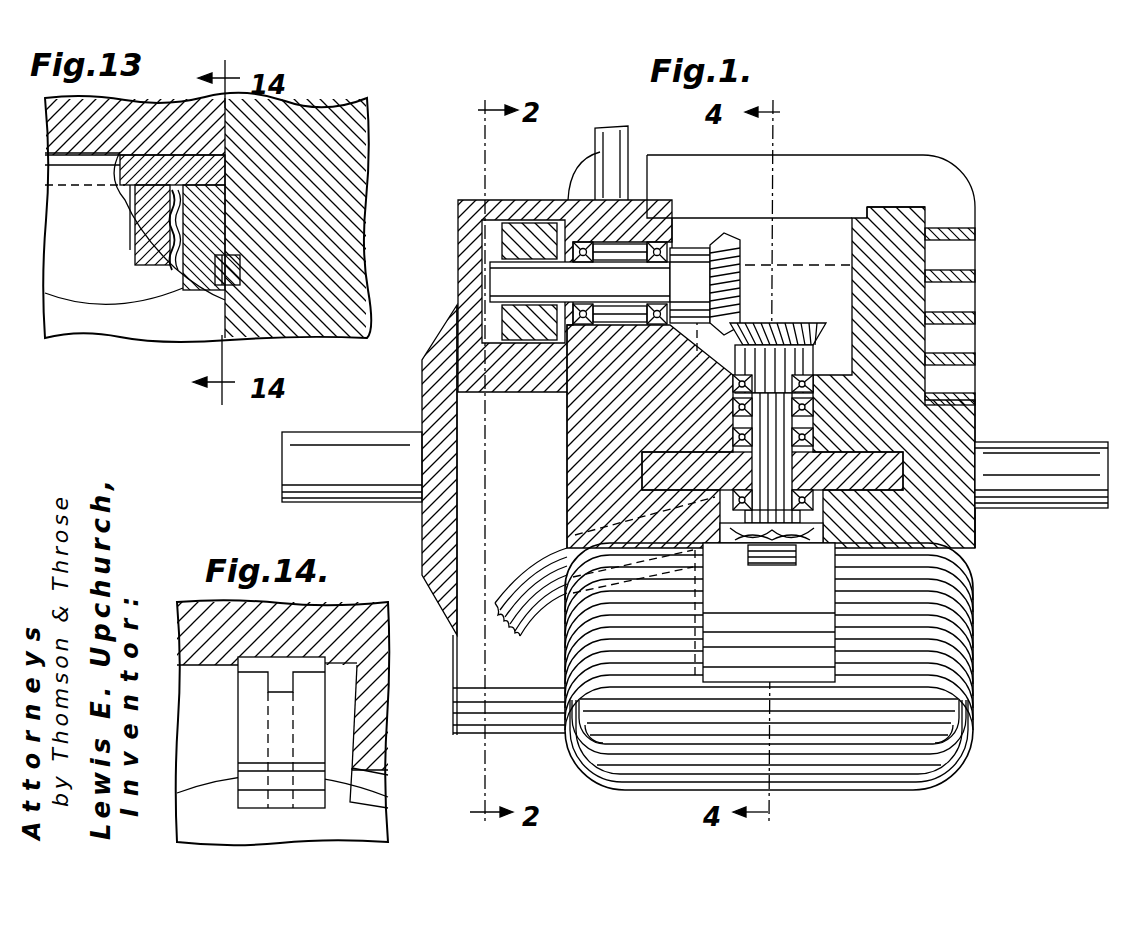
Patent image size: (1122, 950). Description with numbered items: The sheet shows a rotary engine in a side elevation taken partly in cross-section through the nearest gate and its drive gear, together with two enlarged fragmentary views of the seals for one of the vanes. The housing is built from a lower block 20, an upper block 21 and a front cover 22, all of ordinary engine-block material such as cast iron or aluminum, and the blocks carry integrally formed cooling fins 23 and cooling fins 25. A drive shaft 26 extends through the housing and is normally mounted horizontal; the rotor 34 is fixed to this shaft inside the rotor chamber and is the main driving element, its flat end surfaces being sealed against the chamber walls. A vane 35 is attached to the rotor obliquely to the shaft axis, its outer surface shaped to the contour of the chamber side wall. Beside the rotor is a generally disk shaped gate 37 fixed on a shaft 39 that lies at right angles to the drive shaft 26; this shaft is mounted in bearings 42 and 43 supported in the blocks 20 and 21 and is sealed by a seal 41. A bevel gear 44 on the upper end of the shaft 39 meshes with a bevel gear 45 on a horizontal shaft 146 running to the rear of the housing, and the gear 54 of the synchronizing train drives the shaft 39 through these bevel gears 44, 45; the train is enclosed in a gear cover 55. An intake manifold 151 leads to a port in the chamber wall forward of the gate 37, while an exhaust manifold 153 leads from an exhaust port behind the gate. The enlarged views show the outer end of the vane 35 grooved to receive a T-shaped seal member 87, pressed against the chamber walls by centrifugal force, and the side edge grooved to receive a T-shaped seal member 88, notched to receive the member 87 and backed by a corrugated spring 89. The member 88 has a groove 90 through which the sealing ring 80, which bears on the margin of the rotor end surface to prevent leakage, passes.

In FIG. 13, the lower block 20 is at (347, 222).
In FIG. 1, the lower block 20 is at (637, 713).
In FIG. 1, the upper block 21 is at (593, 215).
In FIG. 1, the front cover 22 is at (903, 330).
In FIG. 1, the cooling fins 23 is at (818, 727).
In FIG. 1, the cooling fins 25 is at (975, 357).
In FIG. 1, the drive shaft 26 is at (1048, 452).
In FIG. 13, the rotor 34 is at (172, 323).
In FIG. 14, the rotor 34 is at (356, 830).
In FIG. 13, the vane 35 is at (110, 292).
In FIG. 1, the gate 37 is at (975, 520).
In FIG. 1, the shaft 39 is at (765, 480).
In FIG. 1, the seal 41 is at (710, 393).
In FIG. 1, the bearing 42 is at (733, 403).
In FIG. 1, the bearing 43 is at (720, 518).
In FIG. 1, the bevel gear 44 is at (783, 322).
In FIG. 1, the bevel gear 45 is at (690, 255).
In FIG. 1, the gear 54 is at (530, 320).
In FIG. 1, the gear cover 55 is at (468, 528).
In FIG. 13, the sealing ring 80 is at (222, 290).
In FIG. 14, the sealing ring 80 is at (388, 780).
In FIG. 13, the T-shaped seal member 87 is at (78, 162).
In FIG. 14, the T-shaped seal member 87 is at (240, 664).
In FIG. 13, the T-shaped seal member 88 is at (193, 287).
In FIG. 14, the T-shaped seal member 88 is at (243, 742).
In FIG. 13, the corrugated spring 89 is at (140, 205).
In FIG. 14, the groove 90 is at (265, 782).
In FIG. 1, the drive shaft 146 is at (612, 300).
In FIG. 1, the intake manifold 151 is at (630, 145).
In FIG. 1, the exhaust manifold 153 is at (540, 600).